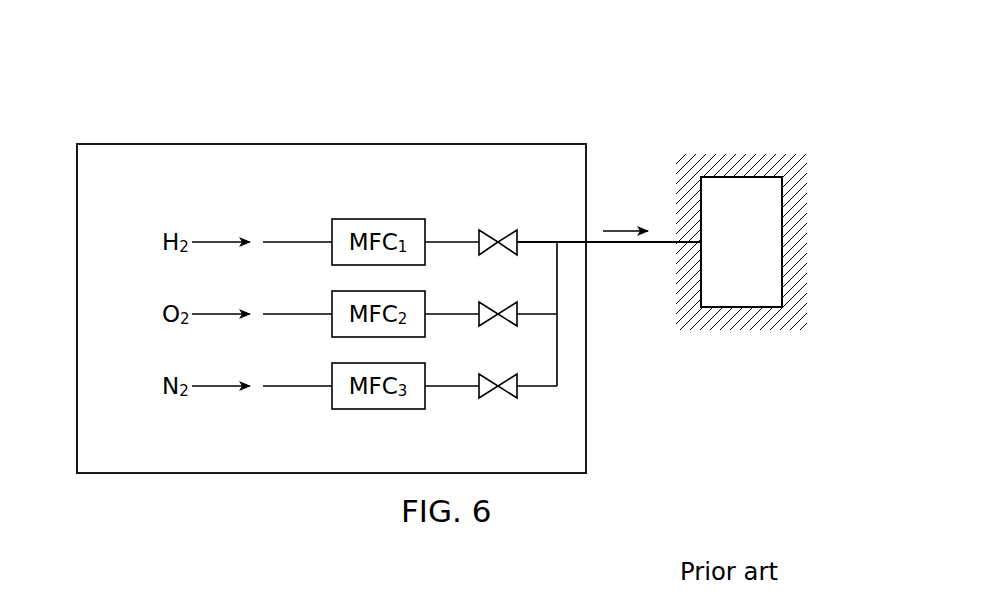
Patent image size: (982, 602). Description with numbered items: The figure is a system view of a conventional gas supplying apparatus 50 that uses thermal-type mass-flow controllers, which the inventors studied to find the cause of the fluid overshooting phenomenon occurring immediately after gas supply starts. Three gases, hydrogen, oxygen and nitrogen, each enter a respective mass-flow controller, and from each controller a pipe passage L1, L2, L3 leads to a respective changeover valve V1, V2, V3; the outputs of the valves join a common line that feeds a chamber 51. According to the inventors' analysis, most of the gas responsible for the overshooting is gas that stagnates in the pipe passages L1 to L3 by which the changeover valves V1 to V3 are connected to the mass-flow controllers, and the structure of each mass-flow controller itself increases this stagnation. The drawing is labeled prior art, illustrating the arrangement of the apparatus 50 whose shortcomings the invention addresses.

The gas supplying apparatus 50 is at (434, 140).
The chamber 51 is at (738, 176).
The pipe passage L1 is at (448, 240).
The pipe passage L2 is at (448, 312).
The pipe passage L3 is at (448, 384).
The changeover valve V1 is at (505, 240).
The changeover valve V2 is at (505, 312).
The changeover valve V3 is at (505, 384).